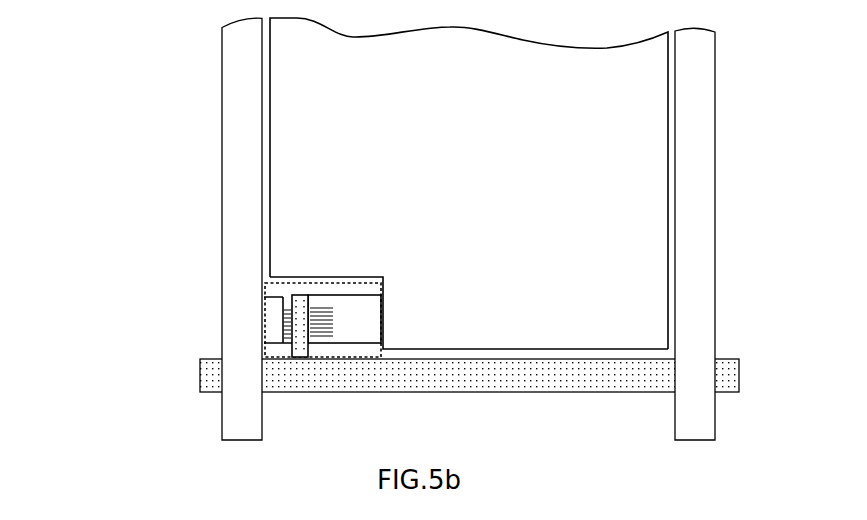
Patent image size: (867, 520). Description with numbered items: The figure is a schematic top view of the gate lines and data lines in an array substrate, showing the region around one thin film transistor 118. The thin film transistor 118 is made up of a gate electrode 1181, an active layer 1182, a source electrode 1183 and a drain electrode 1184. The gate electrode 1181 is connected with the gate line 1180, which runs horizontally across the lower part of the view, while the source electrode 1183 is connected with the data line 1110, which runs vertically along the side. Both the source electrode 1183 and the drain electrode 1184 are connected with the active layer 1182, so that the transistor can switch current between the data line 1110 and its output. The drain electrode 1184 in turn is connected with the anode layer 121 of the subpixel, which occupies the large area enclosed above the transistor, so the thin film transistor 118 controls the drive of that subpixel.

The anode layer 121 is at (295, 112).
The data line 1110 is at (228, 162).
The thin film transistor 118 is at (292, 278).
The source electrode 1183 is at (273, 302).
The active layer 1182 is at (288, 338).
The gate electrode 1181 is at (300, 357).
The drain electrode 1184 is at (360, 333).
The gate line 1180 is at (517, 383).